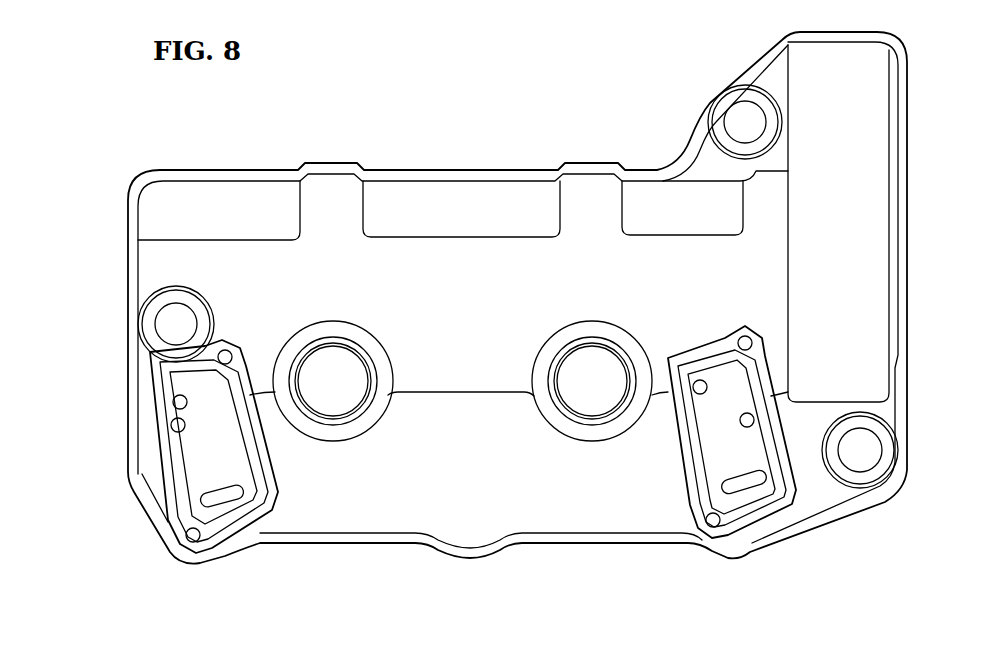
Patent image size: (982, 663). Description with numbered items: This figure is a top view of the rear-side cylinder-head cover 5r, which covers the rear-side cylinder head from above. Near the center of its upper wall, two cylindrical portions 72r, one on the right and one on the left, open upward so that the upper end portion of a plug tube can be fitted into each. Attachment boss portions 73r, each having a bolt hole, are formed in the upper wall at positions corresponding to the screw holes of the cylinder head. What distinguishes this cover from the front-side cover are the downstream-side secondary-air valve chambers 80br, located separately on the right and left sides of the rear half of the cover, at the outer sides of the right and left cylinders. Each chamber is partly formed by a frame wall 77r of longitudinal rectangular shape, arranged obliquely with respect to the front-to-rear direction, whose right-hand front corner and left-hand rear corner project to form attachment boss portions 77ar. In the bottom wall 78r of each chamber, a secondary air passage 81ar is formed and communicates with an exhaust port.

The rear-side cylinder-head cover 5r is at (478, 118).
The attachment boss portion 73r is at (752, 86).
The cylindrical portion 72r is at (383, 334).
The frame wall 77r is at (158, 456).
The attachment boss portion 77ar is at (240, 350).
The bottom wall 78r is at (228, 466).
The downstream-side secondary-air valve chamber 80br is at (479, 470).
The secondary air passage 81ar is at (168, 426).